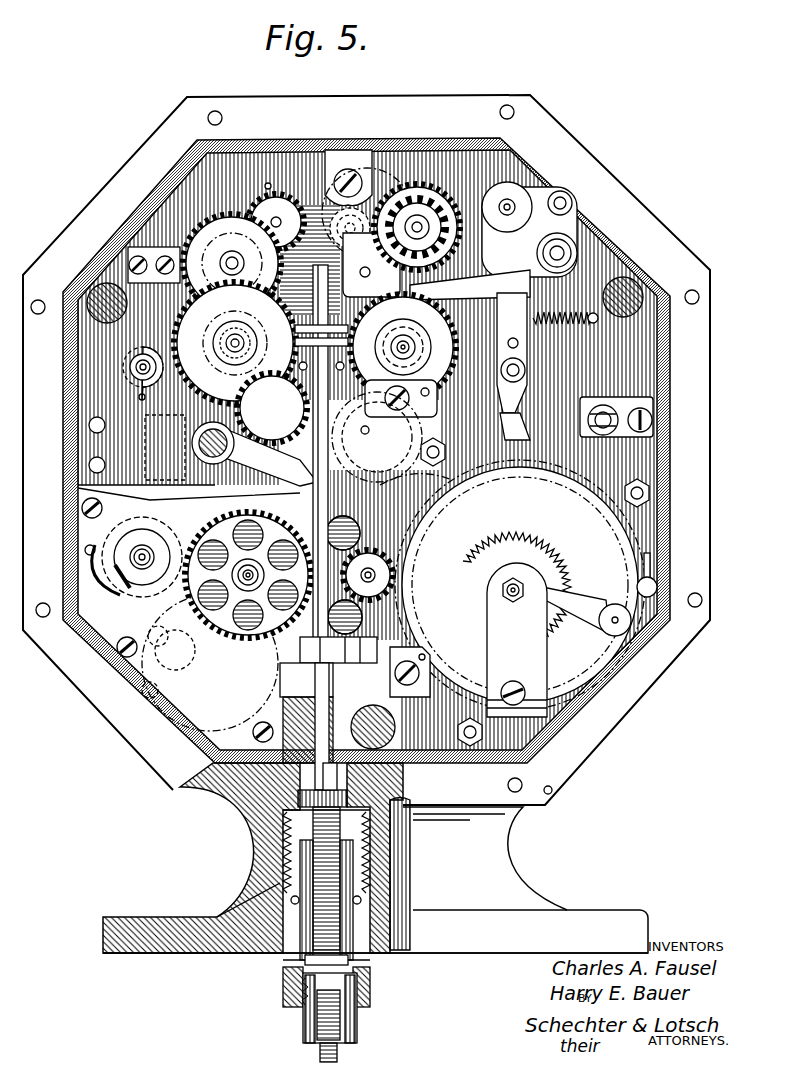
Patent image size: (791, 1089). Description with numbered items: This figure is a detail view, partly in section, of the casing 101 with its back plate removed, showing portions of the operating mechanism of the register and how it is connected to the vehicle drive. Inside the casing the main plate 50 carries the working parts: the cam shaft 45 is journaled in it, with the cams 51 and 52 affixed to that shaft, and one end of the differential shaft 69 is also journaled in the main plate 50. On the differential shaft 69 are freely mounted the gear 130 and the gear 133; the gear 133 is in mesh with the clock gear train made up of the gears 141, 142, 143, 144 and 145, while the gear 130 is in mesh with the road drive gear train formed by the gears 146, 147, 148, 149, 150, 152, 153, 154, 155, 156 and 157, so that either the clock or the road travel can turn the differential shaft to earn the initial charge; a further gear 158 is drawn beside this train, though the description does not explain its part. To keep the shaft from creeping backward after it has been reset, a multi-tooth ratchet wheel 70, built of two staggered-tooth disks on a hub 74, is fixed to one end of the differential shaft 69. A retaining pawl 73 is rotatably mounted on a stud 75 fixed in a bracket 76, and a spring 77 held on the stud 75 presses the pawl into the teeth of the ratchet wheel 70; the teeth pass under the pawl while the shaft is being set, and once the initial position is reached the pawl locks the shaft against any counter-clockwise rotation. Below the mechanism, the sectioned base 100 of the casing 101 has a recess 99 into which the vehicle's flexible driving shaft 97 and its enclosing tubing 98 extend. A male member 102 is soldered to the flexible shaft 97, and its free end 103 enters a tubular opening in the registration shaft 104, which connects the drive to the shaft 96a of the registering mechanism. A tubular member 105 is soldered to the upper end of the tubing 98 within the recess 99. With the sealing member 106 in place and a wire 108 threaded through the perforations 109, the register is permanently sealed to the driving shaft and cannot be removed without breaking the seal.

The main plate 50 is at (642, 365).
The cam shaft 45 is at (177, 617).
The cam 51 is at (200, 493).
The cam 52 is at (248, 561).
The differential shaft 69 is at (410, 340).
The multi-tooth ratchet wheel 70 is at (432, 350).
The retaining pawl 73 is at (380, 326).
The hub 74 is at (403, 351).
The stud 75 is at (400, 398).
The bracket 76 is at (393, 437).
The spring 77 is at (377, 437).
The shaft of the registering mechanism 96a is at (340, 500).
The flexible driving shaft 97 is at (338, 1048).
The tubing 98 is at (358, 1018).
The recess 99 is at (395, 950).
The base 100 is at (526, 940).
The casing 101 is at (515, 895).
The male member 102 is at (337, 778).
The free end 103 is at (310, 712).
The registration shaft 104 is at (392, 697).
The tubular member 105 is at (372, 812).
The sealing member 106 is at (283, 995).
The wire 108 is at (300, 955).
The perforations 109 is at (362, 898).
The gear 130 is at (425, 292).
The gear 133 is at (498, 398).
The clock gear train gear 141 is at (363, 542).
The clock gear train gear 142 is at (416, 487).
The clock gear train gear 143 is at (231, 450).
The clock gear train gear 144 is at (362, 533).
The clock gear train gear 145 is at (505, 410).
The road drive gear train gear 146 is at (537, 255).
The road drive gear train gear 147 is at (500, 195).
The road drive gear train gear 148 is at (435, 195).
The road drive gear train gear 149 is at (368, 180).
The road drive gear train gear 150 is at (268, 183).
The road drive gear train gear 152 is at (262, 200).
The road drive gear train gear 153 is at (232, 220).
The road drive gear train gear 154 is at (190, 248).
The road drive gear train gear 155 is at (180, 320).
The road drive gear train gear 156 is at (165, 350).
The road drive gear train gear 157 is at (282, 370).
The gear 158 is at (273, 408).